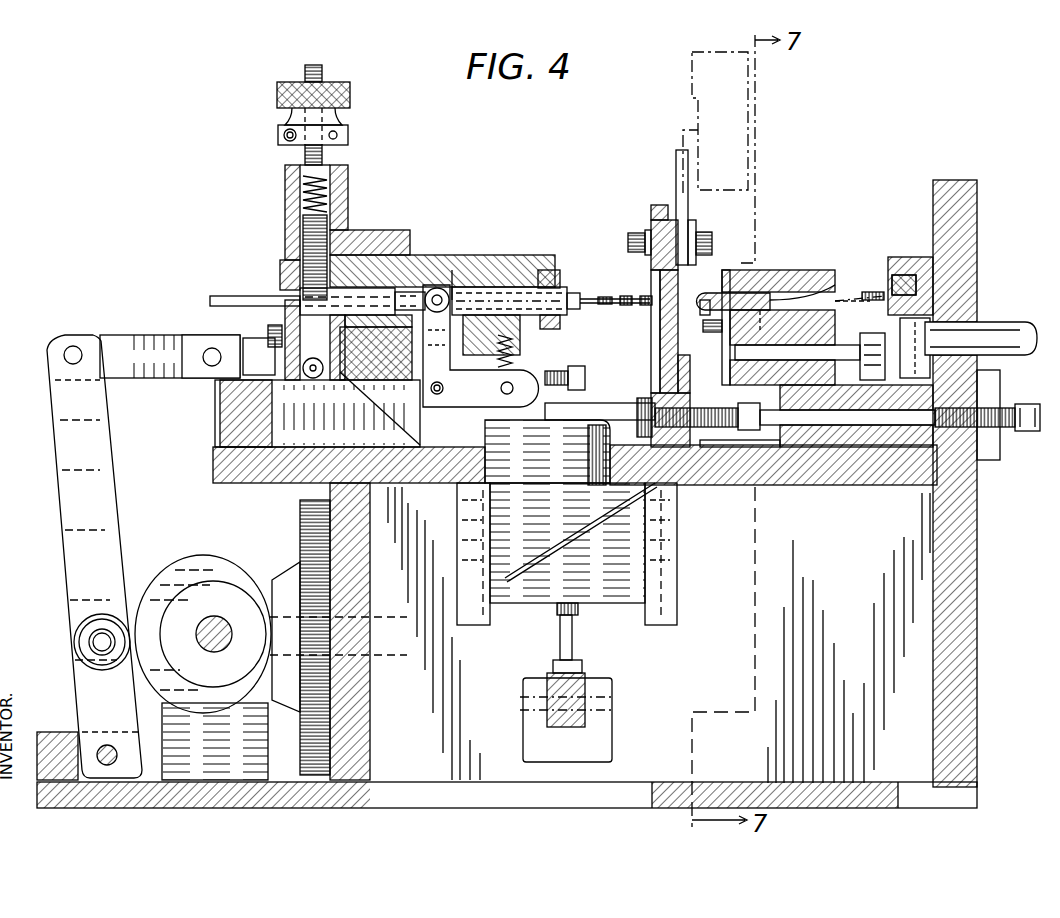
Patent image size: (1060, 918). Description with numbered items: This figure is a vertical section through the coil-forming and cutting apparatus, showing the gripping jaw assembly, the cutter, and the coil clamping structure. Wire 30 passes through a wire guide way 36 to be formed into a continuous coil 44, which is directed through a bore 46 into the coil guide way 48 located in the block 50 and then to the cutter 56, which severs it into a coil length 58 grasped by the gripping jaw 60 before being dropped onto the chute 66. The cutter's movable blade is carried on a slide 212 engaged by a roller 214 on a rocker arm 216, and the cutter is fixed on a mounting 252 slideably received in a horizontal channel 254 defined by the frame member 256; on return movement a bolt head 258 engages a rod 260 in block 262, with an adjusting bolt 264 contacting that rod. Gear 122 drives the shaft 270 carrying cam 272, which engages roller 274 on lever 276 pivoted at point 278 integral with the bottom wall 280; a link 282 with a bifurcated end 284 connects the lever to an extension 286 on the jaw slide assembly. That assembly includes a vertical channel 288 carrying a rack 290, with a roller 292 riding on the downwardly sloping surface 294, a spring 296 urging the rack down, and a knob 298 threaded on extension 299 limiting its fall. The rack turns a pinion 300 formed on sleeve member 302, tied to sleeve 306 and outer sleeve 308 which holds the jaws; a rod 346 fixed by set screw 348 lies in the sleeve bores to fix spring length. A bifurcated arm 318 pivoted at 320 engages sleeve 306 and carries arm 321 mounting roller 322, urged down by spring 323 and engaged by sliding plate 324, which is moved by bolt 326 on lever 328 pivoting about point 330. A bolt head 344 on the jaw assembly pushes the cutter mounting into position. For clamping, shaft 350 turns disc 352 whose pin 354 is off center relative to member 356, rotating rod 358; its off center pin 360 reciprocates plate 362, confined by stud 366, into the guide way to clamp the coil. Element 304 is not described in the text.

The knob 298 is at (277, 94).
The extension 299 is at (305, 154).
The spring 296 is at (330, 188).
The vertical channel 288 is at (327, 216).
The rack 290 is at (285, 236).
The pinion 300 is at (302, 285).
The rod 346 is at (217, 297).
The shaft 304 is at (413, 290).
The bifurcated arm 318 is at (437, 288).
The set screw 348 is at (452, 270).
The sleeve 306 is at (502, 289).
The outer sleeve 308 is at (550, 270).
The spring 323 is at (491, 341).
The arm 321 is at (452, 407).
The pivot 320 is at (431, 388).
The sleeve member 302 is at (376, 353).
The downwardly sloping surface 294 is at (317, 409).
The roller 292 is at (313, 378).
The link 282 is at (115, 337).
The bifurcated end 284 is at (196, 335).
The extension 286 is at (250, 338).
The lever 276 is at (60, 486).
The pivot point 278 is at (105, 747).
The roller 274 is at (75, 640).
The cam 272 is at (160, 583).
The shaft 270 is at (213, 626).
The gear 122 is at (300, 528).
The bottom wall 280 is at (88, 806).
The roller 322 is at (547, 452).
The frame member 256 is at (713, 485).
The sliding plate 324 is at (600, 584).
The chute 66 is at (565, 545).
The bolt 326 is at (558, 611).
The lever 328 is at (588, 678).
The pivot point 330 is at (523, 705).
The bolt head 344 is at (576, 370).
The coil length 58 is at (636, 303).
The gripping jaw 60 is at (604, 296).
The cutter 56 is at (644, 272).
The mounting 252 is at (660, 372).
The slide 212 is at (690, 265).
The rocker arm 216 is at (692, 81).
The roller 214 is at (678, 139).
The off center pin 360 is at (706, 350).
The stud 366 is at (728, 323).
The coil guide way 48 is at (722, 298).
The block 50 is at (793, 280).
The plate 362 is at (782, 327).
The rod 358 is at (797, 351).
The bolt head 258 is at (745, 403).
The member 356 is at (867, 380).
The pin 354 is at (915, 378).
The wire 30 is at (905, 257).
The wire guide way 36 is at (892, 279).
The coil 44 is at (852, 292).
The bore 46 is at (800, 303).
The shaft 350 is at (1000, 330).
The disc 352 is at (992, 391).
The block 262 is at (835, 450).
The rod 260 is at (890, 450).
The adjusting bolt 264 is at (1035, 435).
The horizontal channel 254 is at (748, 450).